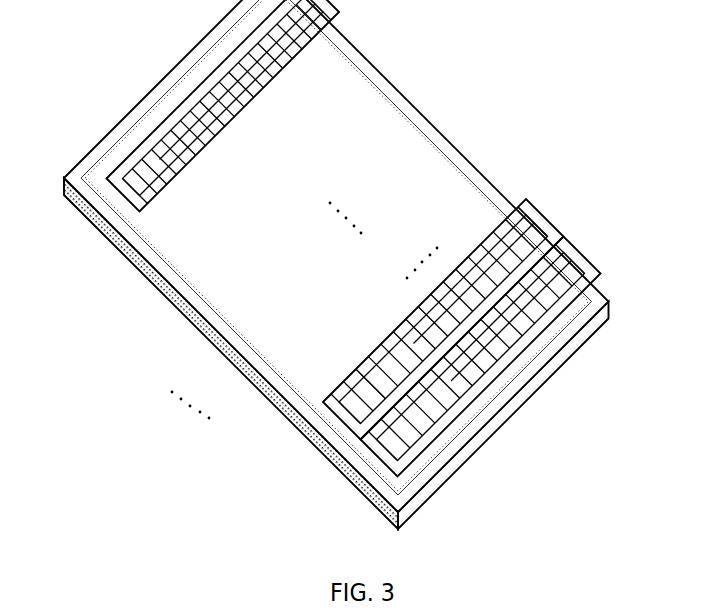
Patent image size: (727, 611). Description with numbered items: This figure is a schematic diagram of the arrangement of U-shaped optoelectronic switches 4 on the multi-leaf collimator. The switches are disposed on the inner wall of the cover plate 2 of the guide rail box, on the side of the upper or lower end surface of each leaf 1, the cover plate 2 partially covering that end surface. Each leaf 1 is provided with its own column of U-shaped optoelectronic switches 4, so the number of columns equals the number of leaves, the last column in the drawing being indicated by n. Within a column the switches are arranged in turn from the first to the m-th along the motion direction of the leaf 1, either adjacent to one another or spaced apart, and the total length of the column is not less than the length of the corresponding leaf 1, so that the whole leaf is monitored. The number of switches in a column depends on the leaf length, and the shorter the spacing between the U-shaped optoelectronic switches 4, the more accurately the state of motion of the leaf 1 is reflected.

The leaf 1 is at (479, 372).
The cover plate 2 is at (332, 436).
The U-shaped optoelectronic switch 4 is at (562, 253).
The n-th electrode strip n is at (121, 199).